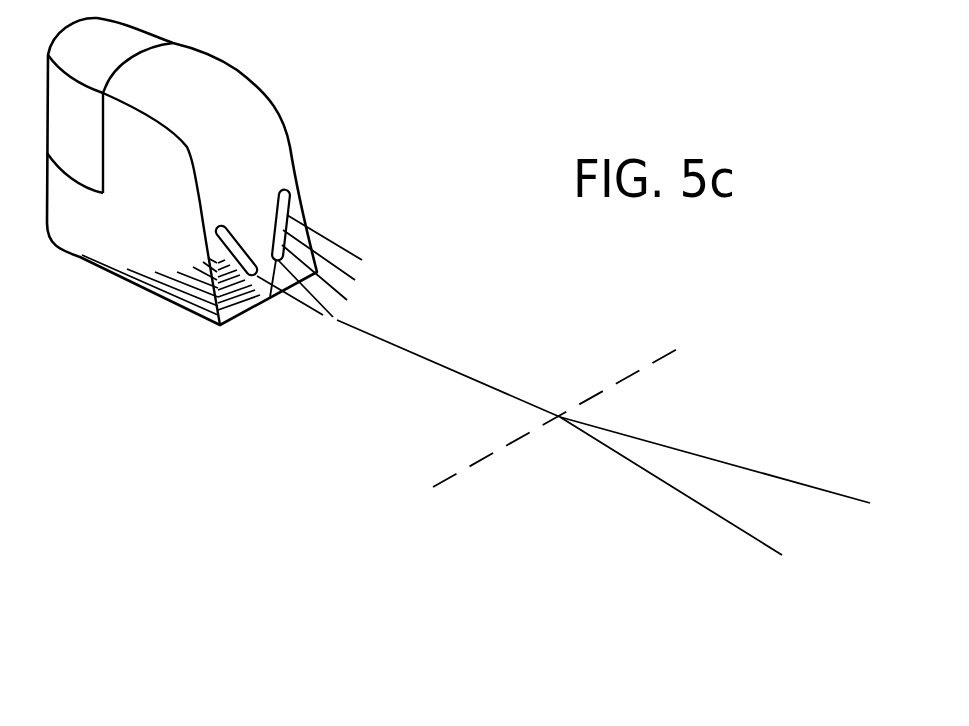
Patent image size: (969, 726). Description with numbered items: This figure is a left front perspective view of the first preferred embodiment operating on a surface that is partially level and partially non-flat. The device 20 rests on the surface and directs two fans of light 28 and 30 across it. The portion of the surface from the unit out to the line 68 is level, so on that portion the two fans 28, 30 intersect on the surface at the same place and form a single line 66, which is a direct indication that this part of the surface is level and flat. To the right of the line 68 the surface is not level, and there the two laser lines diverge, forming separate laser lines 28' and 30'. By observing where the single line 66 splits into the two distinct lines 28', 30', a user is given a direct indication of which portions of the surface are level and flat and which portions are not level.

The device 20 is at (338, 115).
The fan of light 28 is at (349, 255).
The fan of light 30 is at (290, 330).
The single line 66 is at (462, 372).
The line 68 is at (633, 371).
The laser line 28' is at (715, 460).
The laser line 30' is at (671, 486).